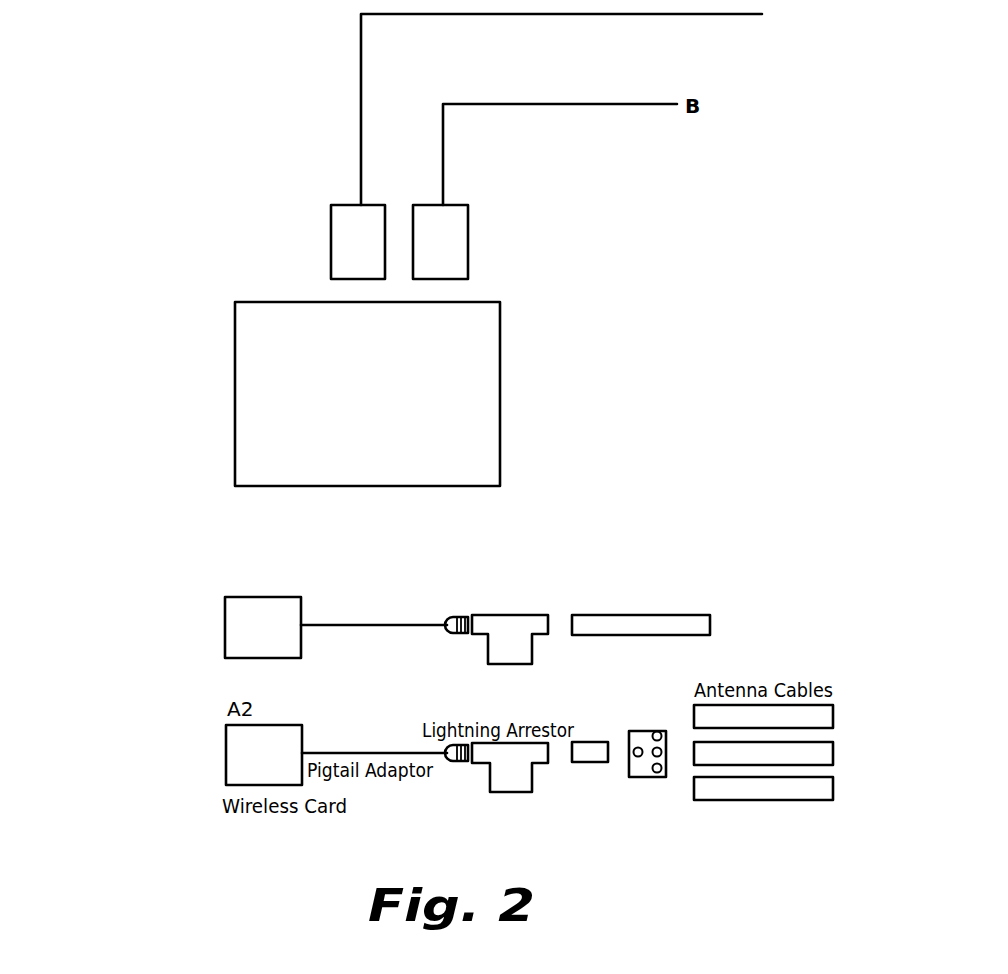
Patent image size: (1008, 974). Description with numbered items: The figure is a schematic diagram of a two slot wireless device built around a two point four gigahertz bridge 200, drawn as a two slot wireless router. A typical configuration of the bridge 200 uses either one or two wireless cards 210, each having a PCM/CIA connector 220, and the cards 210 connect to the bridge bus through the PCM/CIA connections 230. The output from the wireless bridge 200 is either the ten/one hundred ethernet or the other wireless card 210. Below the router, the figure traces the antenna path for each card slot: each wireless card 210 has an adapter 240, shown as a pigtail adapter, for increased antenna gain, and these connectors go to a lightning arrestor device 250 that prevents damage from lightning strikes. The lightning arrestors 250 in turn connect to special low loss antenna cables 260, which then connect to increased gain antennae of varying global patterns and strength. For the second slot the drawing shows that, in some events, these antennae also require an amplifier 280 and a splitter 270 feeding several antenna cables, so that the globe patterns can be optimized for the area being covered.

The 2.4 GHz bridge 200 is at (235, 354).
The wireless card 210 is at (331, 238).
The PCM/CIA connector 220 is at (452, 205).
The PCM/CIA connection 230 is at (585, 105).
The adapter 240 is at (375, 625).
The lightning arrestor device 250 is at (535, 583).
The low loss antenna cable 260 is at (683, 613).
The splitter 270 is at (647, 778).
The amplifier 280 is at (587, 742).